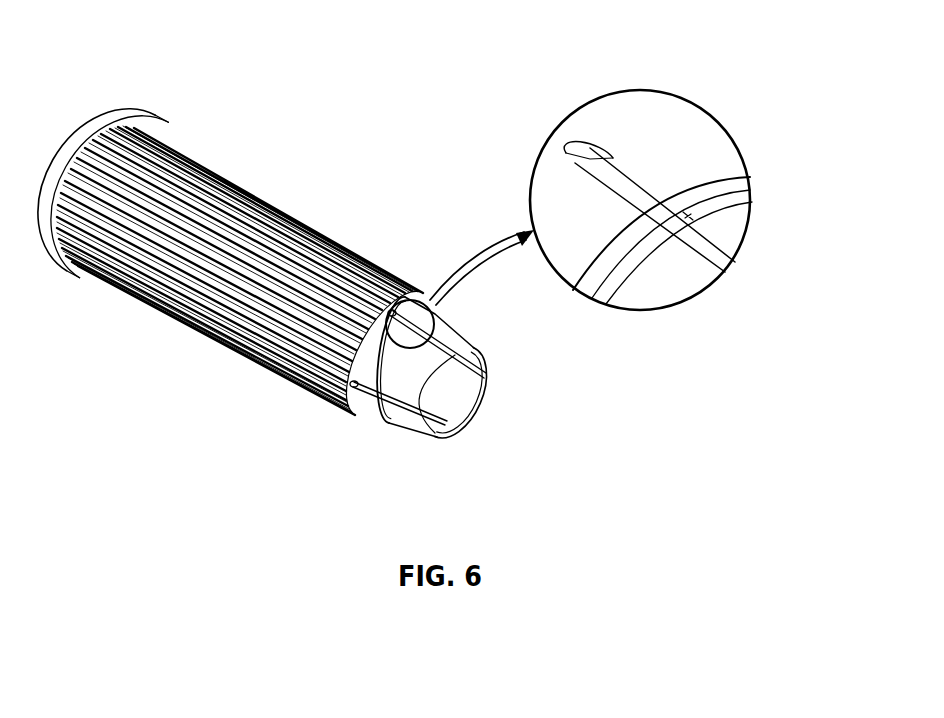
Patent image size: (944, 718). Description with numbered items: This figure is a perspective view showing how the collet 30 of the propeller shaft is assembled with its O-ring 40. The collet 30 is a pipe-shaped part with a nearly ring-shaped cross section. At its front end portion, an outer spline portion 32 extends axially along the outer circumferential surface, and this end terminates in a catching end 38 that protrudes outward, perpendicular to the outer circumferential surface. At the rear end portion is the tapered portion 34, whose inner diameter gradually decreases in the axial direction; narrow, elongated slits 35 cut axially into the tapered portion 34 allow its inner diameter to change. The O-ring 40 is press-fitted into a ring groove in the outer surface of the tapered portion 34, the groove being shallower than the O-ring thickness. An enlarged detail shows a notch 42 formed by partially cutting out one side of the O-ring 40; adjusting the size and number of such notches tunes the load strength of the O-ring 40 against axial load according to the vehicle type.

The collet 30 is at (216, 152).
The outer spline portion 32 is at (305, 222).
The tapered portion 34 is at (433, 380).
The slits 35 is at (410, 403).
The catching end 38 is at (105, 117).
The O-ring 40 is at (730, 162).
The notch 42 is at (750, 212).